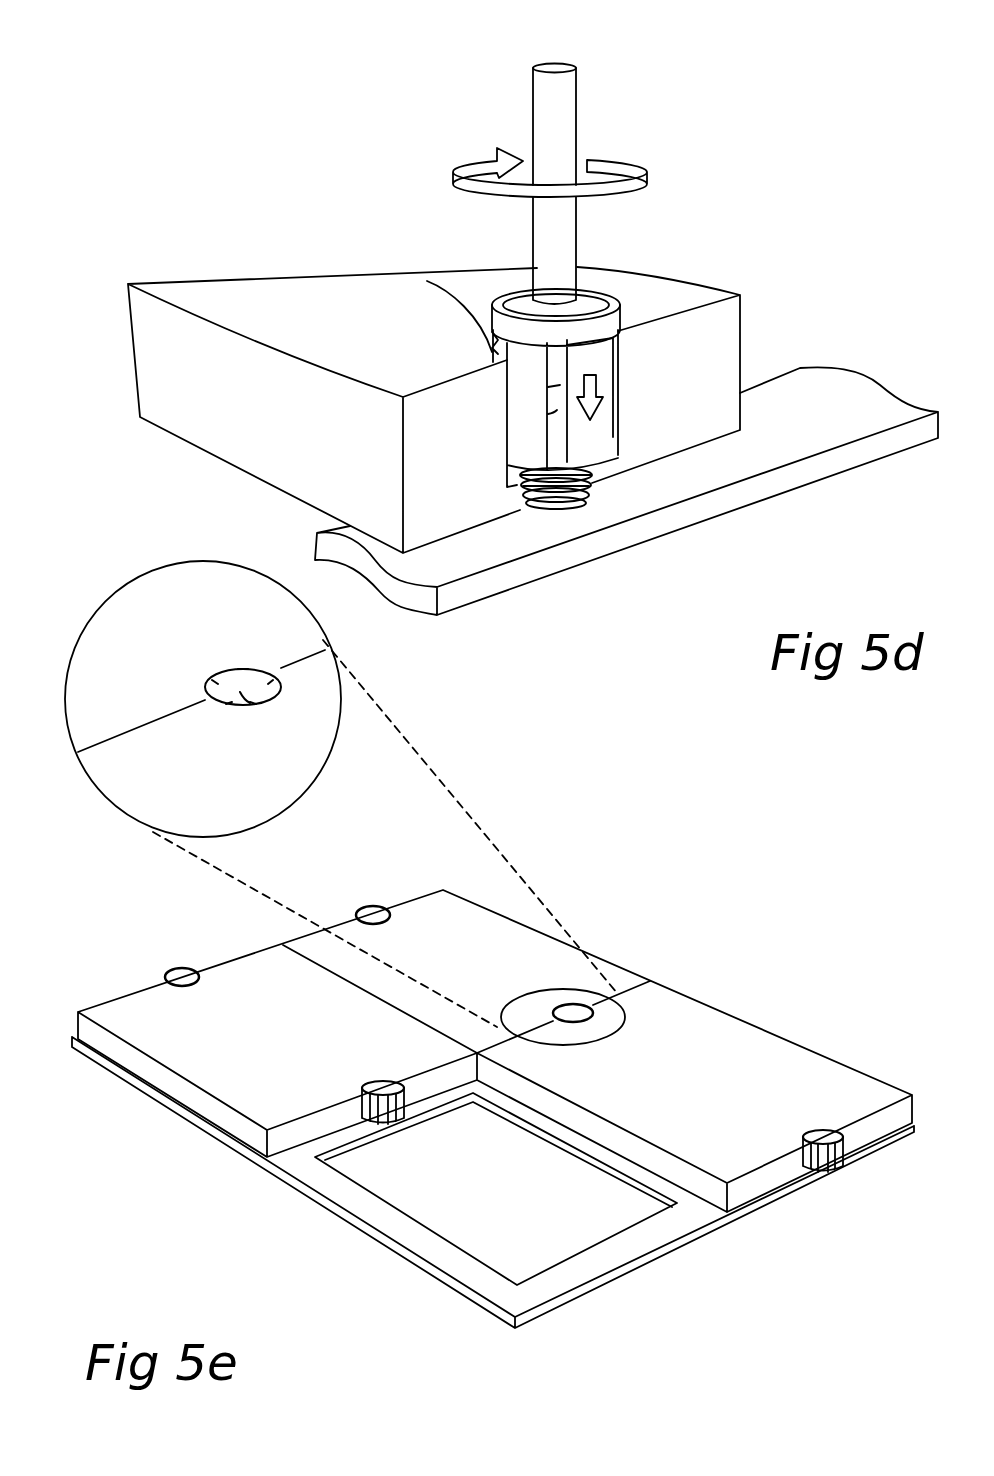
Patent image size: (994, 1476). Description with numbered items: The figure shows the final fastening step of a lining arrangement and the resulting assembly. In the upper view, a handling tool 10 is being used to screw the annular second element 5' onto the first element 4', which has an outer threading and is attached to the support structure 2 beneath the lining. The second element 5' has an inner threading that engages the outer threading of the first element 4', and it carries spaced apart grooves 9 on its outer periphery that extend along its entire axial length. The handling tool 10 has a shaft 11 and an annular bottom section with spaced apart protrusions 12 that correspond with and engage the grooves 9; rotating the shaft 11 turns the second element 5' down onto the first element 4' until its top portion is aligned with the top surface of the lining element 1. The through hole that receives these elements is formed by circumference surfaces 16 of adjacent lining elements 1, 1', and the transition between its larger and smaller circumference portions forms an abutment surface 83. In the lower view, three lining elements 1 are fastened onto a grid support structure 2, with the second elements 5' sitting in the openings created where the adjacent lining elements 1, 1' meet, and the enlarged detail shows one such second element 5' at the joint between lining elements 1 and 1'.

In FIG. 5E, the lining element 1 is at (495, 970).
In FIG. 5E, the lining element 1' is at (343, 814).
In FIG. 5E, the support structure 2 is at (447, 1257).
In FIG. 5D, the second element 5' is at (713, 456).
In FIG. 5E, the second element 5' is at (553, 948).
In FIG. 5D, the first element 4' is at (637, 532).
In FIG. 5D, the grooves 9 is at (553, 413).
In FIG. 5D, the handling tool 10 is at (570, 115).
In FIG. 5D, the shaft 11 is at (553, 68).
In FIG. 5D, the protrusions 12 is at (553, 357).
In FIG. 5D, the circumference surfaces 16 is at (494, 342).
In FIG. 5D, the abutment surface 83 is at (518, 477).